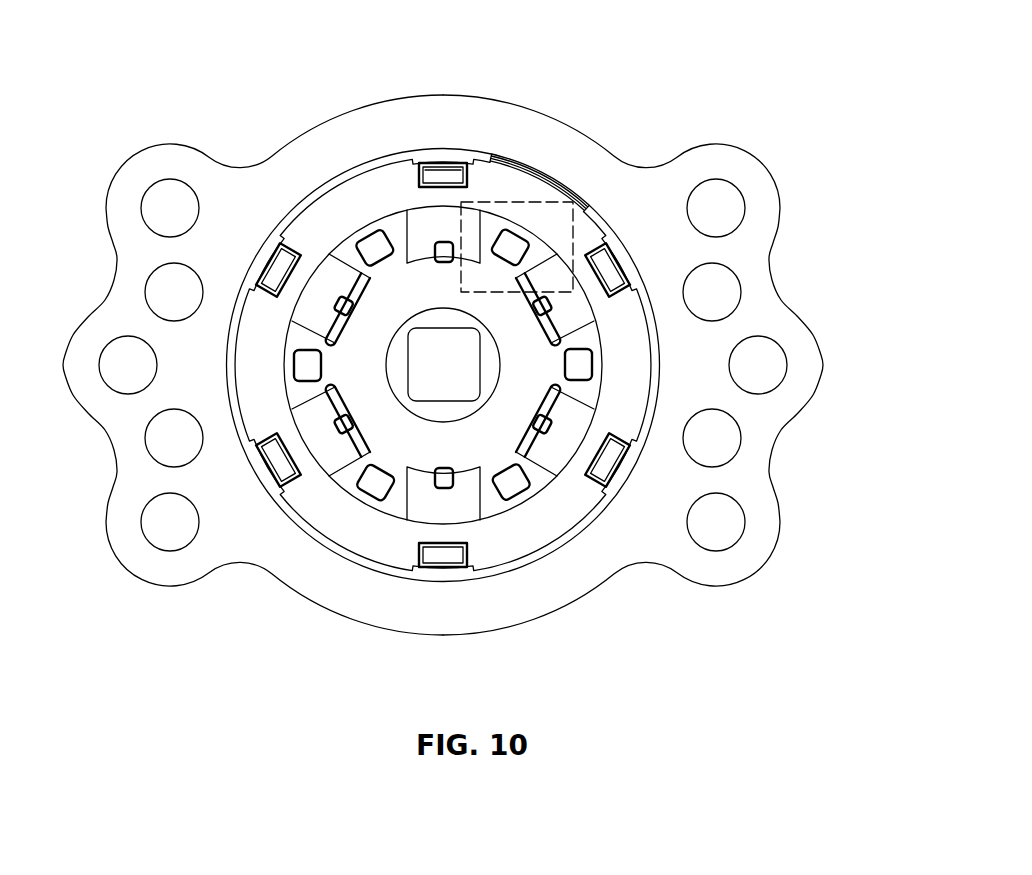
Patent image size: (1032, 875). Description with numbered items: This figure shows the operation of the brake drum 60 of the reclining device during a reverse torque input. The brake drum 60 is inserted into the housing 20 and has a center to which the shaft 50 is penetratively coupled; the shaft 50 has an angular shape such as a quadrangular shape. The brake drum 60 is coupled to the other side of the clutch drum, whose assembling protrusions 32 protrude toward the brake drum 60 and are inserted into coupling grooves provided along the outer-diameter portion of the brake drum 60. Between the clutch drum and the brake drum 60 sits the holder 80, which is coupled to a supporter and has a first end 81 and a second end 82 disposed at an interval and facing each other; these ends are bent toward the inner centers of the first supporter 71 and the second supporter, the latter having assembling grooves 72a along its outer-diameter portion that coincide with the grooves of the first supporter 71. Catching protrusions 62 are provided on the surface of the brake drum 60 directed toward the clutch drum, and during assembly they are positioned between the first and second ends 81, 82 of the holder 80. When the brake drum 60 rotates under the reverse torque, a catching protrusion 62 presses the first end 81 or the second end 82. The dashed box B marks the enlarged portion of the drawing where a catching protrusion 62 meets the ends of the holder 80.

The housing 20 is at (598, 137).
The holder 80 is at (300, 195).
The first supporter 71 is at (340, 199).
The first end 81 is at (480, 175).
The assembling grooves 72a is at (433, 163).
The assembling protrusions 32 is at (453, 173).
The brake drum 60 is at (395, 214).
The catching protrusions 62 is at (508, 237).
The second end 82 is at (545, 263).
The enlarged portion B is at (573, 292).
The shaft 50 is at (472, 392).